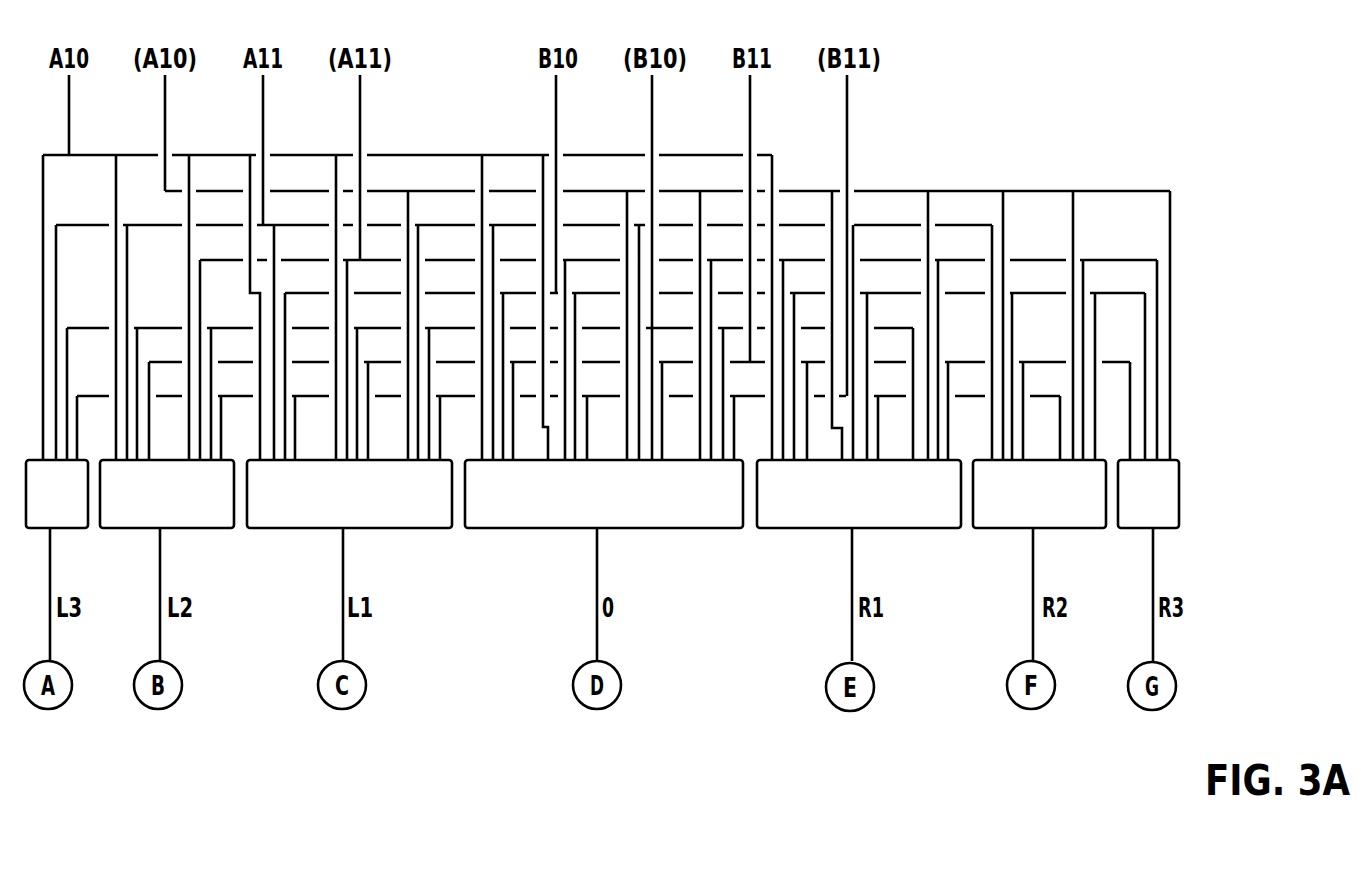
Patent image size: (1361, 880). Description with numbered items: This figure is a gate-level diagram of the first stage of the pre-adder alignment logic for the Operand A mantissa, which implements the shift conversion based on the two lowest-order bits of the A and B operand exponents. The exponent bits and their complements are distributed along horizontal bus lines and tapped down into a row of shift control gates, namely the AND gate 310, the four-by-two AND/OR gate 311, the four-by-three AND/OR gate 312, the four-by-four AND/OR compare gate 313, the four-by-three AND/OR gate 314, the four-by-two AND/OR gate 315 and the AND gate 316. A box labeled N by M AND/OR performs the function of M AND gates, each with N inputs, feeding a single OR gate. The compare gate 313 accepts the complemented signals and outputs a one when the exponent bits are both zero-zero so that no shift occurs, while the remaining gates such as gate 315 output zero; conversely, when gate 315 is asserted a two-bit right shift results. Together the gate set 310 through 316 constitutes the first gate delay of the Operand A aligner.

The shift control gate 310 is at (67, 530).
The shift control gate 311 is at (210, 530).
The shift control gate 312 is at (428, 532).
The 4x4 AND/OR gate 313 is at (708, 533).
The shift control gate 314 is at (927, 533).
The shift control gate 315 is at (1077, 533).
The shift control gate 316 is at (1167, 533).